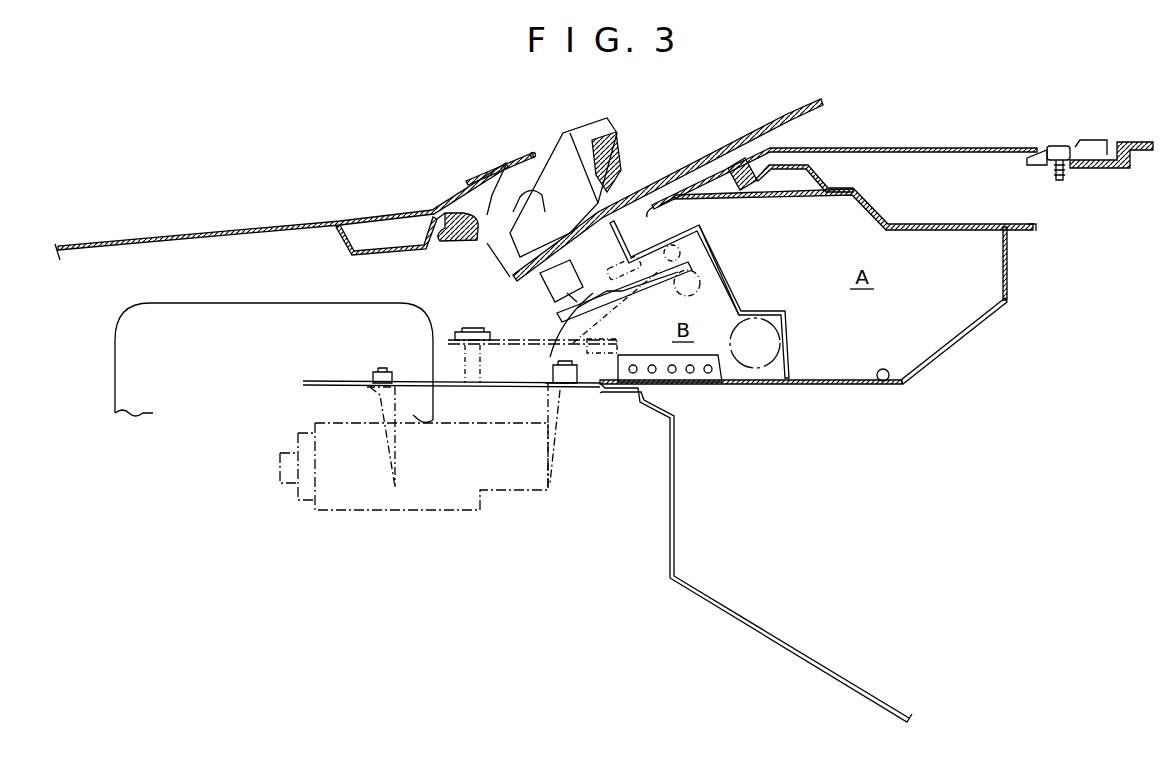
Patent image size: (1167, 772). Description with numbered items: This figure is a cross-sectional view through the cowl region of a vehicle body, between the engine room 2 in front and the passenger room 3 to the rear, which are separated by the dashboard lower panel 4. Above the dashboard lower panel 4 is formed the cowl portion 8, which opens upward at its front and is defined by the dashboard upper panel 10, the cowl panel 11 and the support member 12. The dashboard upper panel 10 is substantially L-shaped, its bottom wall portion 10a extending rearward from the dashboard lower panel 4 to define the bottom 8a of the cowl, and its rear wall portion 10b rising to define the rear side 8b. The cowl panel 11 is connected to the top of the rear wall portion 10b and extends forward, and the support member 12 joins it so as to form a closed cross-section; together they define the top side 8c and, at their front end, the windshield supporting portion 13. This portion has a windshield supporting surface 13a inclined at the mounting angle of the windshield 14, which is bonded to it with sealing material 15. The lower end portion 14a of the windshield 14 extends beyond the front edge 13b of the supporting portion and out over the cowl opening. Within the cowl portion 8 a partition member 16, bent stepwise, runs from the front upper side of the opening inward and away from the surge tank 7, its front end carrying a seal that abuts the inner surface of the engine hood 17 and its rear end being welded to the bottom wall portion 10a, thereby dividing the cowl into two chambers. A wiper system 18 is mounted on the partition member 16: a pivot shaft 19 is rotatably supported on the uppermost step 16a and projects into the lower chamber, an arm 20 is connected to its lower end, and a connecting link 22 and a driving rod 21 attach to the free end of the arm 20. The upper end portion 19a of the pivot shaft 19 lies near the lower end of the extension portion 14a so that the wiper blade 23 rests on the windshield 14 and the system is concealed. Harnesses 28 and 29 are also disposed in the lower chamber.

The engine room 2 is at (436, 458).
The passenger room 3 is at (931, 489).
The dashboard lower panel 4 is at (670, 552).
The surge tank 7 is at (348, 315).
The cowl portion 8 is at (991, 215).
The bottom of cowl portion 8a is at (890, 383).
The rear side of cowl portion 8b is at (1003, 263).
The top side of cowl portion 8c is at (912, 236).
The dashboard upper panel 10 is at (957, 347).
The bottom wall portion 10a is at (832, 385).
The rear wall portion 10b is at (1010, 283).
The cowl panel 11 is at (958, 223).
The support member 12 is at (800, 200).
The windshield supporting portion 13 is at (844, 162).
The windshield supporting surface 13a is at (667, 177).
The front edge of windshield supporting portion 13b is at (648, 209).
The windshield 14 is at (798, 113).
The lower end portion of windshield 14a is at (512, 232).
The sealing material 15 is at (720, 158).
The partition member 16 is at (699, 299).
The uppermost step of partition member 16a is at (505, 262).
The engine hood 17 is at (500, 158).
The wiper system 18 is at (548, 294).
The pivot shaft 19 is at (467, 183).
The upper end portion of pivot shaft 19a is at (527, 190).
The arm 20 is at (573, 345).
The driving rod 21 is at (640, 270).
The connecting link 22 is at (730, 303).
The wiper blade 23 is at (622, 135).
The harness 28 is at (680, 373).
The harness 29 is at (777, 353).